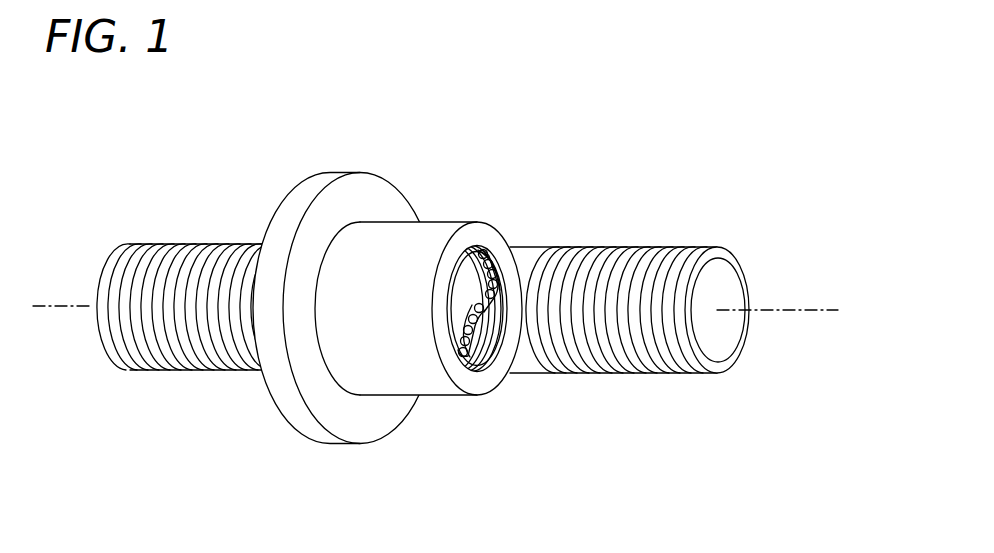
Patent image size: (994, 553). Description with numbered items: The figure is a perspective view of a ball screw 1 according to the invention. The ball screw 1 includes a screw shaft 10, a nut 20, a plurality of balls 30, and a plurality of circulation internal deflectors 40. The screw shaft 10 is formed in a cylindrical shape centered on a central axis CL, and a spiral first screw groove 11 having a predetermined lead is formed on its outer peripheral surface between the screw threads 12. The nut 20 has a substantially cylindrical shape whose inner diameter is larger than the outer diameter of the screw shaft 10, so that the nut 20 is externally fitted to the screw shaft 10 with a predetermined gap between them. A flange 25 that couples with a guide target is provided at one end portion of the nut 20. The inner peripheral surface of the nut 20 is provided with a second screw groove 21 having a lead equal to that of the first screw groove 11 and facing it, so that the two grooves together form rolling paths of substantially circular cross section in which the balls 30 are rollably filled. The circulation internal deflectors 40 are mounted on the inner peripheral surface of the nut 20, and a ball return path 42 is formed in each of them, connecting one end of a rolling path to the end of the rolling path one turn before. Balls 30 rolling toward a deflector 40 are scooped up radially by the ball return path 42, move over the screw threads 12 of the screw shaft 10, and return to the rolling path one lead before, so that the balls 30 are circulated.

The ball screw 1 is at (651, 232).
The screw shaft 10 is at (723, 338).
The first screw groove 11 is at (619, 345).
The screw threads 12 is at (640, 342).
The nut 20 is at (396, 380).
The second screw groove 21 is at (502, 346).
The flange 25 is at (282, 405).
The balls 30 is at (520, 278).
The circulation internal deflectors 40 is at (517, 285).
The ball return path 42 is at (528, 295).
The central axis CL is at (822, 305).